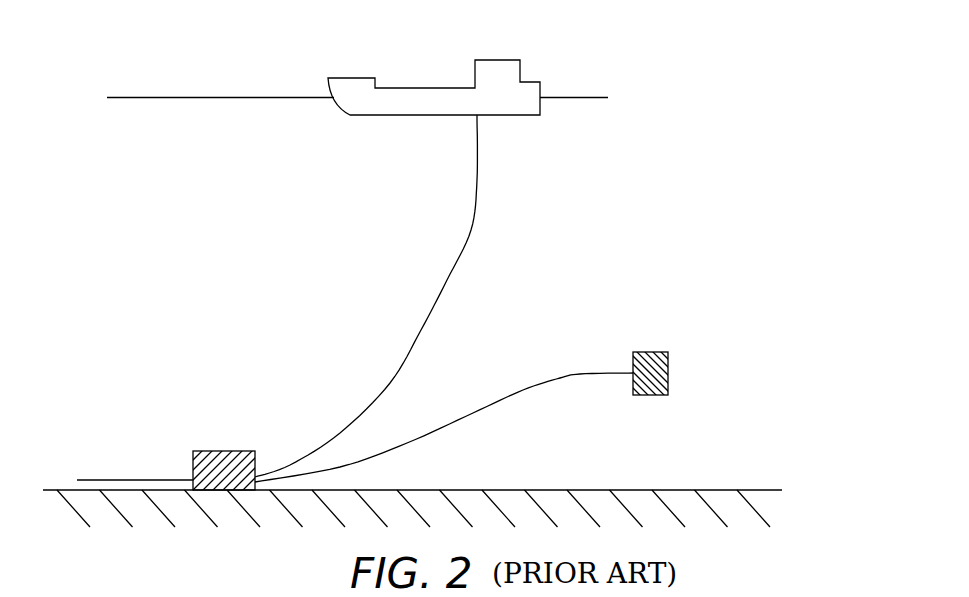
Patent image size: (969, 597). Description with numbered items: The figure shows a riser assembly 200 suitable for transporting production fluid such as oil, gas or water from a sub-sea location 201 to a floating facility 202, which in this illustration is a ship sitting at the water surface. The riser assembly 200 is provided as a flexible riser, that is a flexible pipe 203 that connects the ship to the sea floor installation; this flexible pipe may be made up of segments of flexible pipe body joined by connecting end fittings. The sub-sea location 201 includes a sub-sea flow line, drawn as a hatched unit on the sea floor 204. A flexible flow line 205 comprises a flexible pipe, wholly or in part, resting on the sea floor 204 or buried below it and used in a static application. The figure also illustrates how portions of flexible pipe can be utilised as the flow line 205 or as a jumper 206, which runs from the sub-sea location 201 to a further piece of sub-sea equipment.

The riser assembly 200 is at (253, 224).
The sub-sea location 201 is at (222, 451).
The floating facility 202 is at (497, 60).
The flexible pipe 203 is at (422, 327).
The sea floor 204 is at (732, 492).
The flexible flow line 205 is at (118, 479).
The jumper 206 is at (555, 378).